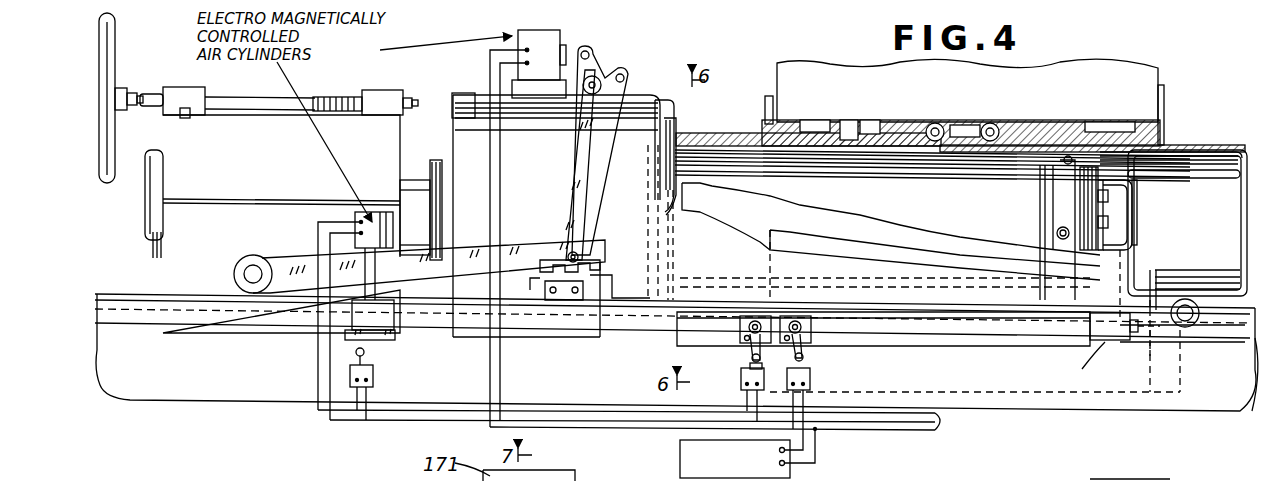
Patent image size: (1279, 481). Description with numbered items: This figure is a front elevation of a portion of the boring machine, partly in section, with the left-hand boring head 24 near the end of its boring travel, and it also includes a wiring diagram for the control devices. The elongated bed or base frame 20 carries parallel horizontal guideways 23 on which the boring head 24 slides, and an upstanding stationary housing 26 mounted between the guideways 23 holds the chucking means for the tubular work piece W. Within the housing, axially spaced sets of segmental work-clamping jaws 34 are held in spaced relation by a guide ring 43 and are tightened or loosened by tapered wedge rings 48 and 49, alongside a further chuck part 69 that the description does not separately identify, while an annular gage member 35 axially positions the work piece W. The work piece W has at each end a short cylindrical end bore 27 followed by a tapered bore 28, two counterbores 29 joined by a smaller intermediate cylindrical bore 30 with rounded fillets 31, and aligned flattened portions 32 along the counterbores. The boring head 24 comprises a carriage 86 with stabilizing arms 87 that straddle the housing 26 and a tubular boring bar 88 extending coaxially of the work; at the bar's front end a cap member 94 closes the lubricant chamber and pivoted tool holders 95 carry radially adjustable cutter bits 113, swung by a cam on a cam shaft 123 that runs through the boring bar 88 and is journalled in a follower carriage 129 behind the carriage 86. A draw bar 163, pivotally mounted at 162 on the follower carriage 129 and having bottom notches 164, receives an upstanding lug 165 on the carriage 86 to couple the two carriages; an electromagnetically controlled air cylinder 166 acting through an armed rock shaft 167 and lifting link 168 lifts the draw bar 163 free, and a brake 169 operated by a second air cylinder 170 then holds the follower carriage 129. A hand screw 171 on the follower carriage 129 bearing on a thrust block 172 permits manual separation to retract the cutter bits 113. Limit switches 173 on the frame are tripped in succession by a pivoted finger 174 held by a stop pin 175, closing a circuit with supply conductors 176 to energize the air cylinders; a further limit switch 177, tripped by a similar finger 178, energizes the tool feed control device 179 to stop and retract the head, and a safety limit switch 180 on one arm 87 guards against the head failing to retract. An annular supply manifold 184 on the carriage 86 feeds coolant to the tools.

The bed or base frame 20 is at (145, 386).
The guideways 23 is at (108, 297).
The boring head 24 is at (556, 216).
The stationary housing 26 is at (1115, 75).
The cylindrical end bore 27 is at (1250, 150).
The tapered bore 28 is at (1236, 152).
The counterbores 29 is at (1218, 170).
The intermediate cylindrical bore 30 is at (1130, 180).
The rounded fillets 31 is at (1138, 172).
The flattened portions 32 is at (1171, 231).
The work-clamping jaws 34 is at (805, 118).
The annular stop or gage member 35 is at (726, 132).
The guide ring or connector ring 43 is at (868, 118).
The wedge ring 48 is at (848, 120).
The wedge ring 49 is at (900, 118).
The roller 69 is at (942, 120).
The carriage 86 is at (645, 100).
The arms 87 is at (950, 338).
The tubular boring bar 88 is at (932, 215).
The cap member 94 is at (1134, 242).
The tool holders 95 is at (1062, 168).
The cutter bit 113 is at (1048, 175).
The cam shaft 123 is at (423, 180).
The support or follower carriage 129 is at (208, 320).
The roller 162 is at (250, 272).
The coupling member or draw bar 163 is at (287, 260).
The notches 164 is at (540, 281).
The lug 165 is at (592, 276).
The electromagnetically controlled air cylinder 166 is at (548, 32).
The armed rock shaft 167 is at (598, 64).
The lifting link 168 is at (603, 170).
The brake 169 is at (388, 341).
The electromagnetically controlled air cylinder 170 is at (385, 211).
The hand screw 171 is at (153, 93).
The thrust block 172 is at (465, 95).
The limit switches 173 is at (742, 379).
The pivoted finger 174 is at (750, 357).
The stop pin 175 is at (747, 341).
The supply conductors 176 is at (935, 432).
The limit switch 177 is at (812, 381).
The finger 178 is at (805, 343).
The tool feed control device 179 is at (680, 458).
The safety limit switch 180 is at (1118, 342).
The annular supply manifold 184 is at (684, 152).
The work piece W is at (1196, 152).